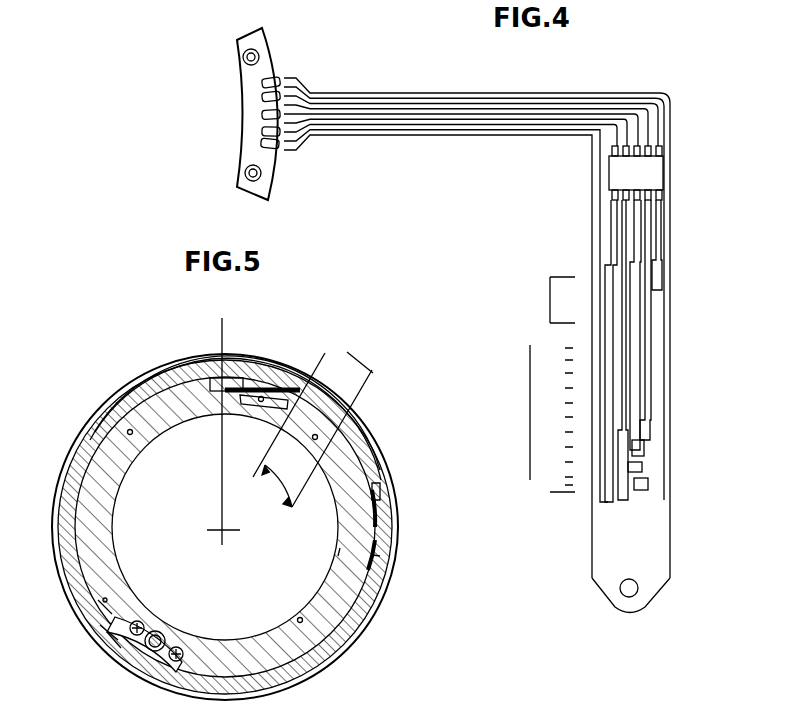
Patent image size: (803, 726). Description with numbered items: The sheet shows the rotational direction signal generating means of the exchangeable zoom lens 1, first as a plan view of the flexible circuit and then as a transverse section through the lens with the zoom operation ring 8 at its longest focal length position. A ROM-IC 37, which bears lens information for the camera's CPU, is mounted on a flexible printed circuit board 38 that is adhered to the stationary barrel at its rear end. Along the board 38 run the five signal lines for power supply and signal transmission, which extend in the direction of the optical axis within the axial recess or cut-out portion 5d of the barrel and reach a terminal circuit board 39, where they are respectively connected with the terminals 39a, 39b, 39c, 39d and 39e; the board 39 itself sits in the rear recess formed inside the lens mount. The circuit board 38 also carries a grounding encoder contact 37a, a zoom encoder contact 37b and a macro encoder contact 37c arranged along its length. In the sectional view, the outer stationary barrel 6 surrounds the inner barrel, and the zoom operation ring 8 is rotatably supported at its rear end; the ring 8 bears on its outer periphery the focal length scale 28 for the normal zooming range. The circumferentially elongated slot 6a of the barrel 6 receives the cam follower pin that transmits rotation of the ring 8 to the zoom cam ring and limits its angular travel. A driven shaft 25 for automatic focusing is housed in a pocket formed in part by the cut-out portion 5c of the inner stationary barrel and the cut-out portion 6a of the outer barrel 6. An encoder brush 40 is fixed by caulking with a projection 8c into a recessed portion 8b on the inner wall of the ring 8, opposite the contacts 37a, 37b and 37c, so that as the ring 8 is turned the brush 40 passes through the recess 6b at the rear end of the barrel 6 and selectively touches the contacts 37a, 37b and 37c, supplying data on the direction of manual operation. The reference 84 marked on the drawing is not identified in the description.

In FIG. 5, the exchangeable zoom lens 1 is at (135, 376).
In FIG. 5, the cut-out portion 5c is at (123, 630).
In FIG. 5, the axial recess or cut-out portion 5d is at (252, 404).
In FIG. 5, the outer stationary barrel 6 is at (293, 653).
In FIG. 5, the circumferentially elongated slot 6a is at (107, 627).
In FIG. 5, the recess 6b is at (355, 555).
In FIG. 5, the zoom operation ring 8 is at (350, 432).
In FIG. 5, the recessed portion 8b is at (378, 560).
In FIG. 5, the projection 8c is at (365, 515).
In FIG. 5, the driven shaft 25 is at (155, 635).
In FIG. 4, the focal length scale 28 is at (548, 316).
In FIG. 5, the focal length scale 28 is at (325, 422).
In FIG. 4, the ROM-IC 37 is at (679, 189).
In FIG. 5, the ROM-IC 37 is at (268, 385).
In FIG. 4, the grounding encoder contact 37a is at (605, 285).
In FIG. 4, the zoom encoder contact 37b is at (635, 483).
In FIG. 4, the macro encoder contact 37c is at (655, 290).
In FIG. 4, the flexible printed circuit board 38 is at (592, 180).
In FIG. 5, the flexible printed circuit board 38 is at (354, 458).
In FIG. 4, the terminal circuit board 39 is at (271, 166).
In FIG. 4, the terminal 39a is at (262, 82).
In FIG. 4, the terminal 39b is at (262, 96).
In FIG. 4, the terminal 39c is at (262, 114).
In FIG. 4, the terminal 39d is at (262, 131).
In FIG. 4, the terminal 39e is at (261, 144).
In FIG. 5, the encoder brush 40 is at (368, 492).
In FIG. 4, the scale reference 84 is at (548, 424).
In FIG. 5, the scale reference 84 is at (223, 419).